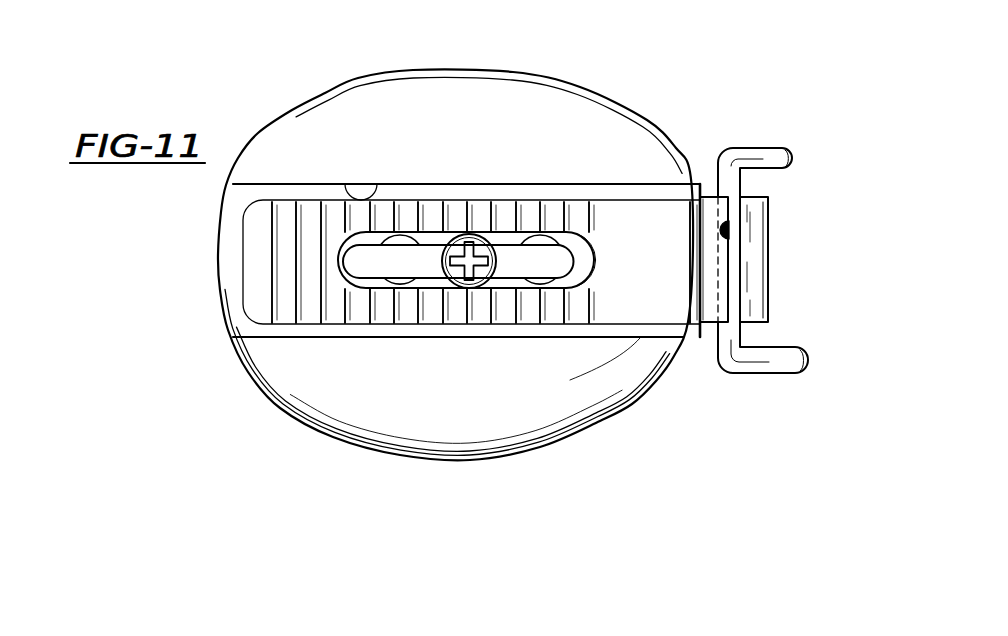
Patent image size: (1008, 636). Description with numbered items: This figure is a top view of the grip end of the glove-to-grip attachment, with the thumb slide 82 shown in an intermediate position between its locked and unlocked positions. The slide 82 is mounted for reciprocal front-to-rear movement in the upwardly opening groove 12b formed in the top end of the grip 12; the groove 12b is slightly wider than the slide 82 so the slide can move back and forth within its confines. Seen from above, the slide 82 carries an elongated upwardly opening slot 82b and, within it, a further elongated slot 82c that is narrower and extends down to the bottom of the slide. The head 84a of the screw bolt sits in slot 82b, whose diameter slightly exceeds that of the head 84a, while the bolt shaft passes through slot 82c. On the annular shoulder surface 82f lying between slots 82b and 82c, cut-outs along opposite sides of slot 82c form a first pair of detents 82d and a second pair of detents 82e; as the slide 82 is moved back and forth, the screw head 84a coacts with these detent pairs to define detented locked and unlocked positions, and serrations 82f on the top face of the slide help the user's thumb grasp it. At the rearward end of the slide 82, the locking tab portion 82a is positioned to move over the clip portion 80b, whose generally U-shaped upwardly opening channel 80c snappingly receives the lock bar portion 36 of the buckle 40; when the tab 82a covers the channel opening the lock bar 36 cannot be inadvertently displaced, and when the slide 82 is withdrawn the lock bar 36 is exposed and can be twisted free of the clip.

The grip 12 is at (212, 268).
The groove 12b is at (380, 186).
The lock bar portion 36 is at (722, 167).
The buckle 40 is at (737, 368).
The clip portion 80b is at (770, 302).
The channel 80c is at (728, 232).
The thumb slide 82 is at (252, 297).
The locking tab portion 82a is at (683, 290).
The elongated slot 82b is at (340, 243).
The further elongated slot 82c is at (562, 287).
The first pair of detents 82d is at (407, 243).
The second pair of detents 82e is at (530, 232).
The annular shoulder surface 82f is at (587, 233).
The head 84a is at (493, 236).